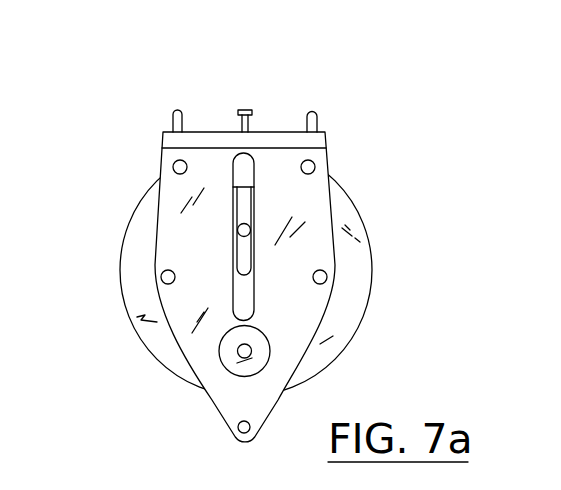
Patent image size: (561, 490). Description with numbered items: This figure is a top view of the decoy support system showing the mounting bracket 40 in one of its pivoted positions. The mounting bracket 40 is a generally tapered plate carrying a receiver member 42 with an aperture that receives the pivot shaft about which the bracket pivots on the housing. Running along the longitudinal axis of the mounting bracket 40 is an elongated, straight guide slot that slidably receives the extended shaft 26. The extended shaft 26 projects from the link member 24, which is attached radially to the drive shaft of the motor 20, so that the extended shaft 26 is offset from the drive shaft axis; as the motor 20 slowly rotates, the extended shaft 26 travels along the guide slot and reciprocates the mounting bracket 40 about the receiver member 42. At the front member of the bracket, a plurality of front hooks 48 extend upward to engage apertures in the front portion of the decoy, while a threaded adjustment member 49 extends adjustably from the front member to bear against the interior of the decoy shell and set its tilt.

The motor 20 is at (350, 315).
The link member 24 is at (247, 255).
The extended shaft 26 is at (238, 229).
The mounting bracket 40 is at (317, 252).
The receiver member 42 is at (227, 352).
The front hooks 48 is at (172, 120).
The threaded adjustment member 49 is at (245, 104).